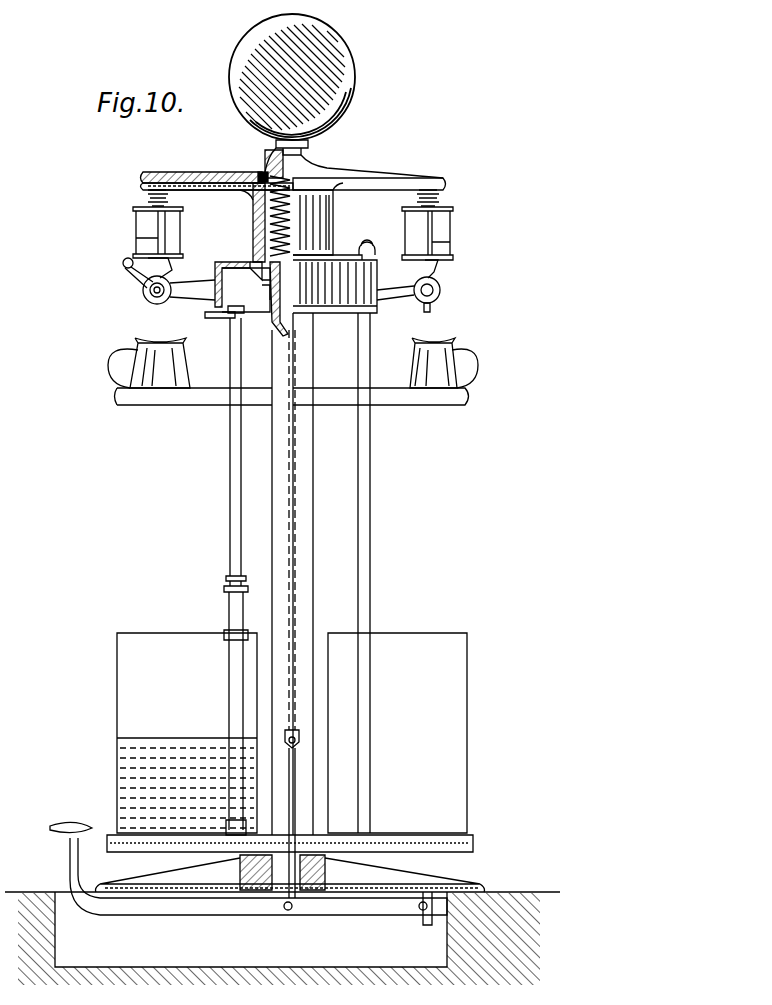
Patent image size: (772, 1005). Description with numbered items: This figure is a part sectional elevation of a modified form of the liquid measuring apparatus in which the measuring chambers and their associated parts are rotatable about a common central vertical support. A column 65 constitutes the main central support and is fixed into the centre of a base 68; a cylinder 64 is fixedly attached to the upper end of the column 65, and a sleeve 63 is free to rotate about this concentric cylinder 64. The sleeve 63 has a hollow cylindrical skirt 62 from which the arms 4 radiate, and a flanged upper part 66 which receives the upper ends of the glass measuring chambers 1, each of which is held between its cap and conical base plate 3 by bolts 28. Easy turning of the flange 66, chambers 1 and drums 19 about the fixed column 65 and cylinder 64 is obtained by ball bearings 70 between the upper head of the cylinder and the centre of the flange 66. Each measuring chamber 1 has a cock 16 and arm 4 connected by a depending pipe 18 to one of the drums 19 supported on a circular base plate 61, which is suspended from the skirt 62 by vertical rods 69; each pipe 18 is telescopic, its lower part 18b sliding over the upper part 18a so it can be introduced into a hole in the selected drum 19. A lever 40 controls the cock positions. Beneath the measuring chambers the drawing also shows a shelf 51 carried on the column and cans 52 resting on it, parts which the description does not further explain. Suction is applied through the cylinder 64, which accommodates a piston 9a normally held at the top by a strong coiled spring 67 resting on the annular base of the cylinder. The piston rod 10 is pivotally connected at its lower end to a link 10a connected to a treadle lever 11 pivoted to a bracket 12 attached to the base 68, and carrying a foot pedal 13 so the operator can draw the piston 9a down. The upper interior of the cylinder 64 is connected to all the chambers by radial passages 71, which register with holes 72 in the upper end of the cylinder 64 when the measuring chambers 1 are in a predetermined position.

The measuring chamber 1 is at (135, 228).
The base plate 3 is at (172, 266).
The arm 4 is at (192, 298).
The piston 9a is at (253, 226).
The piston rod 10 is at (292, 485).
The link 10a is at (296, 777).
The lever 11 is at (345, 915).
The bracket 12 is at (427, 916).
The foot pedal 13 is at (60, 822).
The cock 16 is at (148, 300).
The pipe 18 is at (230, 510).
The upper pipe part 18a is at (226, 578).
The lower pipe part 18b is at (229, 676).
The drum 19 is at (117, 718).
The bolt 28 is at (150, 240).
The lever 40 is at (138, 280).
The shelf 51 is at (440, 398).
The can 52 is at (128, 372).
The circular base plate 61 is at (126, 852).
The skirt 62 is at (262, 318).
The sleeve 63 is at (253, 214).
The cylinder 64 is at (256, 266).
The column 65 is at (313, 534).
The flange 66 is at (208, 172).
The coiled spring 67 is at (275, 286).
The base 68 is at (445, 878).
The vertical rod 69 is at (370, 592).
The ball bearings 70 is at (262, 175).
The radial passage 71 is at (178, 178).
The hole 72 is at (250, 196).